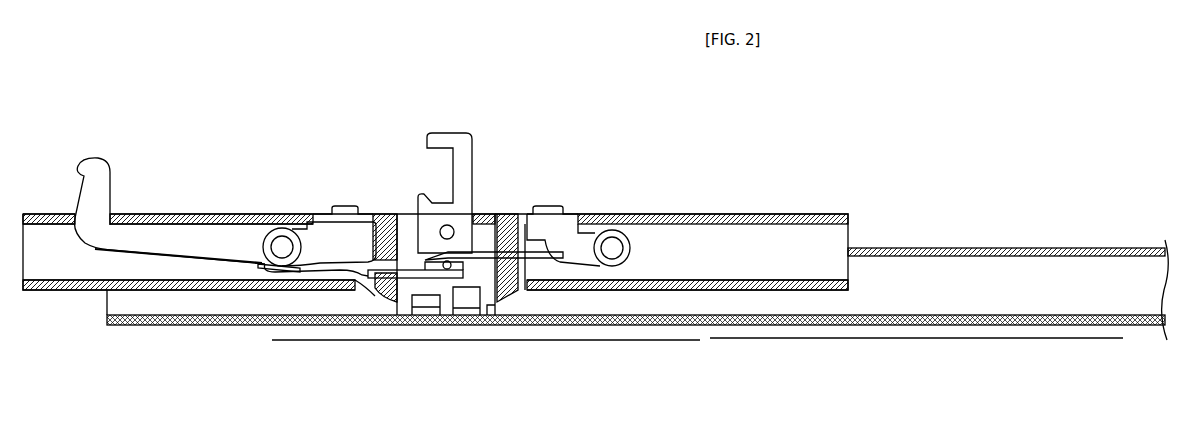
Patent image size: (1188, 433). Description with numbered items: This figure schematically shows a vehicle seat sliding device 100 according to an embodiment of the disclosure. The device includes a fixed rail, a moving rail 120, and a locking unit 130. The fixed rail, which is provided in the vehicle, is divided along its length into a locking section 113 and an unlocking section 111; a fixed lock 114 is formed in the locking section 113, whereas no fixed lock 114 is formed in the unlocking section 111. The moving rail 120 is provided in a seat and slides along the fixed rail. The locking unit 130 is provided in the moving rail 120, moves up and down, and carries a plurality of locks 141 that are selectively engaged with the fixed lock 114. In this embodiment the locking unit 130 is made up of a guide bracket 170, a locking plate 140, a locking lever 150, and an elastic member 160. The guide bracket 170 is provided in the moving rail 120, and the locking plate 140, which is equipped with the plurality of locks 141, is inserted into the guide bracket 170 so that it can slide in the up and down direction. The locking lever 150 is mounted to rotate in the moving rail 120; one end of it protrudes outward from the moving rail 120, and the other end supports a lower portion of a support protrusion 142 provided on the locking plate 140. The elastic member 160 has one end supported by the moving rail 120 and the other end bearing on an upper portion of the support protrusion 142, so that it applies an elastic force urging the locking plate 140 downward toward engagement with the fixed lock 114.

The vehicle seat sliding device 100 is at (112, 87).
The unlocking section 111 is at (268, 335).
The locking section 113 is at (706, 333).
The fixed lock 114 is at (770, 326).
The moving rail 120 is at (705, 245).
The locking unit 130 is at (548, 135).
The locking plate 140 is at (478, 172).
The locks 141 is at (407, 318).
The support protrusion 142 is at (440, 223).
The locking lever 150 is at (205, 245).
The elastic member 160 is at (543, 262).
The guide bracket 170 is at (390, 220).